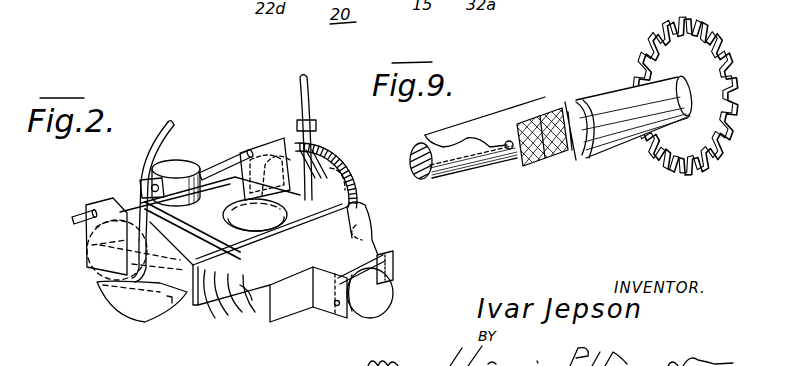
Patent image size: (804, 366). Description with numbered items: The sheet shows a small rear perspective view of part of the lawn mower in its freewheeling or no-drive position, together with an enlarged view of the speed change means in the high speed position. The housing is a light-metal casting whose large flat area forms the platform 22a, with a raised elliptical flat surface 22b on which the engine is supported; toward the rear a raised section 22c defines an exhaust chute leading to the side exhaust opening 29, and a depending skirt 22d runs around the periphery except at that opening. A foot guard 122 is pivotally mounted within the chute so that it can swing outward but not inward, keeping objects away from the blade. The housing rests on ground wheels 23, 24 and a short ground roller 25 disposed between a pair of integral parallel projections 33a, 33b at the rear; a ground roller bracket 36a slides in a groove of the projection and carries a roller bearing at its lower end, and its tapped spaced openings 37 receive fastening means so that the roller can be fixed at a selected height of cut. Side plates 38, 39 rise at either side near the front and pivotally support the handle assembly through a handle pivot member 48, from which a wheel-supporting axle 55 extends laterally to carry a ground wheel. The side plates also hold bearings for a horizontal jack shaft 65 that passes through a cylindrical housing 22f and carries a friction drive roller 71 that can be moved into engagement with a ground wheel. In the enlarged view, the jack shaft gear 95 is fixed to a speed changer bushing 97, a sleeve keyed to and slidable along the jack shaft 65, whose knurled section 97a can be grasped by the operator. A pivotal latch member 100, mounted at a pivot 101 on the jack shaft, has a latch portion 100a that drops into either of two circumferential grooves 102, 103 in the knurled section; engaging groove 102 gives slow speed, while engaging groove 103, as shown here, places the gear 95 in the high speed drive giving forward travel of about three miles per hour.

In FIG. 2, the platform 22a is at (233, 223).
In FIG. 2, the raised elliptical flat surface 22b is at (224, 222).
In FIG. 2, the raised section 22c is at (197, 360).
In FIG. 2, the depending skirt 22d is at (297, 307).
In FIG. 2, the cylindrical housing 22f is at (178, 163).
In FIG. 2, the jack shaft 65 is at (224, 164).
In FIG. 9, the jack shaft 65 is at (459, 166).
In FIG. 2, the left-hand side plate 38 is at (259, 152).
In FIG. 2, the handle pivot member 48 is at (141, 184).
In FIG. 2, the ground wheel 23 is at (318, 152).
In FIG. 2, the right-hand side plate 39 is at (105, 206).
In FIG. 2, the friction drive roller 71 is at (72, 216).
In FIG. 2, the wheel-supporting axle 55 is at (105, 294).
In FIG. 2, the ground wheel 24 is at (118, 312).
In FIG. 2, the foot guard 122 is at (229, 301).
In FIG. 2, the exhaust opening 29 is at (252, 283).
In FIG. 2, the projection 33b is at (328, 278).
In FIG. 2, the projection 33a is at (380, 253).
In FIG. 2, the ground roller 25 is at (372, 304).
In FIG. 2, the ground roller bracket 36a is at (394, 255).
In FIG. 2, the tapped spaced openings 37 is at (395, 268).
In FIG. 9, the pivotal latch member 100 is at (476, 122).
In FIG. 9, the latch portion 100a is at (578, 115).
In FIG. 9, the pivot mounting 101 is at (506, 152).
In FIG. 9, the circumferential groove 102 is at (541, 162).
In FIG. 9, the circumferential groove 103 is at (583, 148).
In FIG. 9, the jack shaft speed changer bushing 97 is at (639, 143).
In FIG. 9, the knurled section 97a is at (572, 156).
In FIG. 9, the jack shaft gear 95 is at (692, 50).